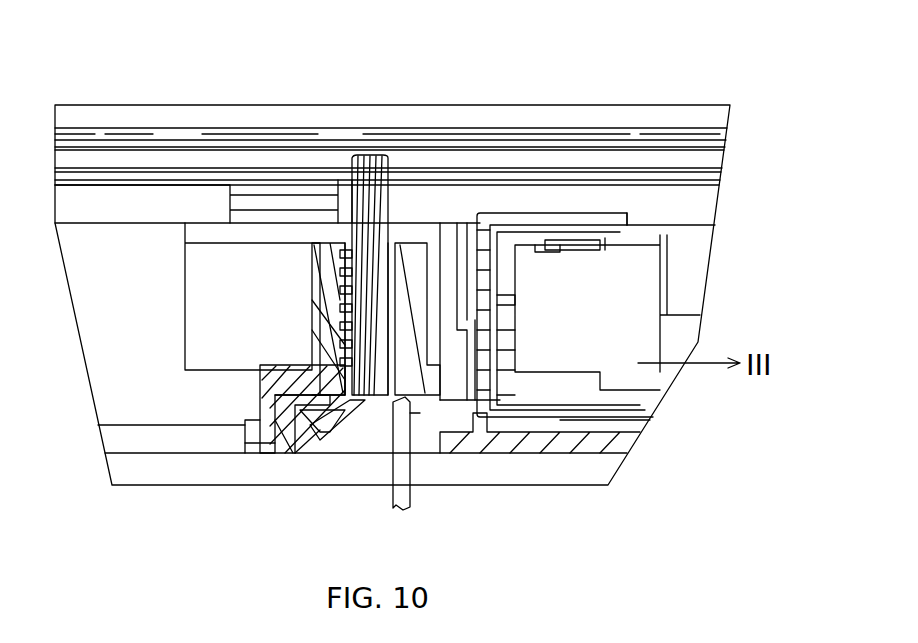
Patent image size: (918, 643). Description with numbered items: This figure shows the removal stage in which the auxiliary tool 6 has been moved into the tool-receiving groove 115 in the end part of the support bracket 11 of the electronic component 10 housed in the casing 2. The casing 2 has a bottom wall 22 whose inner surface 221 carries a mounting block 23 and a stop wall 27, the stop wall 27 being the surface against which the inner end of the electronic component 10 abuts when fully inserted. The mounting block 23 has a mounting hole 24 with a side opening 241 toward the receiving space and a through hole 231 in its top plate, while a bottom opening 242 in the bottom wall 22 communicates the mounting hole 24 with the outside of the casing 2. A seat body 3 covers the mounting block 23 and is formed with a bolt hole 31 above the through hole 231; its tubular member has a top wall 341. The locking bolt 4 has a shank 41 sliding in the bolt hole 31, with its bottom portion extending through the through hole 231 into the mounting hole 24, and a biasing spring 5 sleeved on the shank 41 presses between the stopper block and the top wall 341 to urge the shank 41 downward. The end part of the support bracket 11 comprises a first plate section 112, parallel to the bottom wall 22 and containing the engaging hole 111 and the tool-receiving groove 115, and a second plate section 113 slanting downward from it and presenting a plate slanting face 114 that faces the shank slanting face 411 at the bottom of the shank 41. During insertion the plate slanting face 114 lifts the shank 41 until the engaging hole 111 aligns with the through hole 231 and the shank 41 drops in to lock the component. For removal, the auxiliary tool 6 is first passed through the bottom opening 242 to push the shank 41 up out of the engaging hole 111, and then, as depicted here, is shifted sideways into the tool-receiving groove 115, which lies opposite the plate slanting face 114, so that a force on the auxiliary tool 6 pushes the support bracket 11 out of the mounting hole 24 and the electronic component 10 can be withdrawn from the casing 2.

The casing 2 is at (575, 496).
The seat body 3 is at (300, 238).
The locking bolt 4 is at (352, 143).
The biasing spring 5 is at (400, 243).
The auxiliary tool 6 is at (398, 430).
The electronic component 10 is at (665, 213).
The support bracket 11 is at (635, 204).
The bottom wall 22 is at (568, 442).
The mounting block 23 is at (255, 425).
The mounting hole 24 is at (348, 450).
The stop wall 27 is at (453, 330).
The bolt hole 31 is at (342, 345).
The shank 41 is at (352, 290).
The engaging hole 111 is at (300, 388).
The first plate section 112 is at (443, 400).
The second plate section 113 is at (322, 452).
The plate slanting face 114 is at (280, 415).
The tool-receiving groove 115 is at (413, 413).
The inner surface 221 is at (245, 443).
The through hole 231 is at (335, 390).
The side opening 241 is at (437, 384).
The bottom opening 242 is at (293, 420).
The top wall 341 is at (342, 249).
The shank slanting face 411 is at (340, 385).